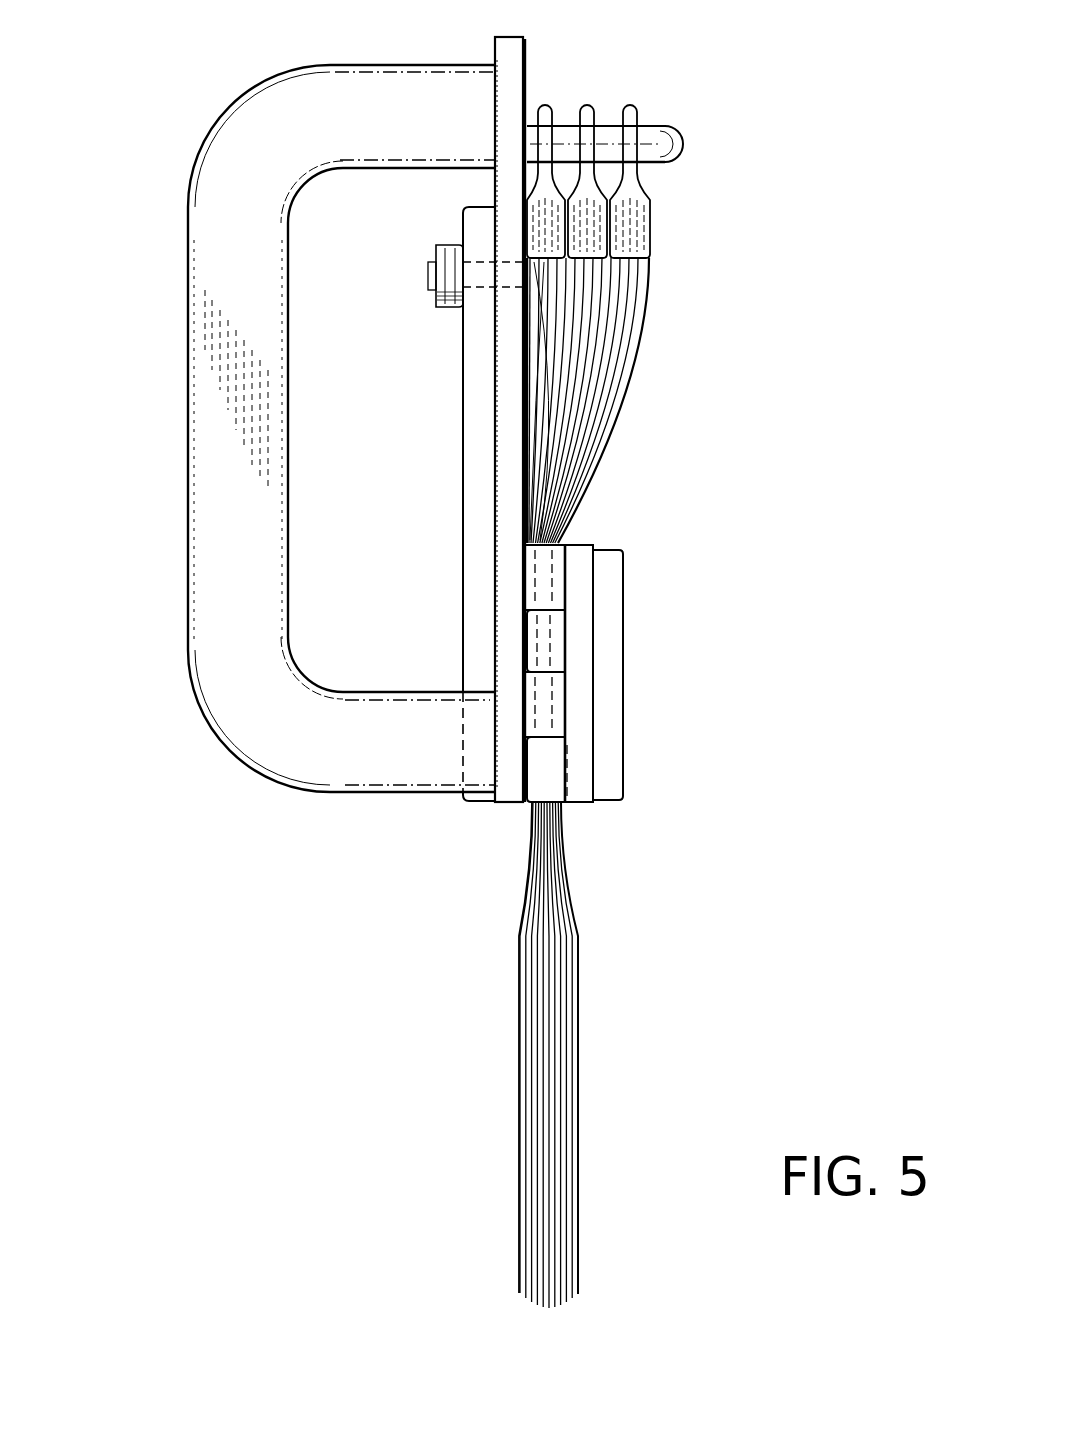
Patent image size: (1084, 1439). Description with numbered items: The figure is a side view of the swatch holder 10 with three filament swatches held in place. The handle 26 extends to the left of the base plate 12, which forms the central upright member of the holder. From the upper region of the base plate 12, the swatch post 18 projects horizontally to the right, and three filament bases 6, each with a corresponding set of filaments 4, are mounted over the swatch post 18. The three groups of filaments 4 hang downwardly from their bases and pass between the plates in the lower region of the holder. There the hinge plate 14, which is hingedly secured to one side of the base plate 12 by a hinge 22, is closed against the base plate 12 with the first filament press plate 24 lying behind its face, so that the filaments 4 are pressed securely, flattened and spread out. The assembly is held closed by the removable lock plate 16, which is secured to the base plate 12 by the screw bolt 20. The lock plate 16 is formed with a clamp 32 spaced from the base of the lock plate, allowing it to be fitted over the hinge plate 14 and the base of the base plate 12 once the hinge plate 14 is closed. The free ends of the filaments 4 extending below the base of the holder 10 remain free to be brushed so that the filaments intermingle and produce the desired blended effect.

The filaments 4 is at (616, 376).
The filament bases 6 is at (552, 104).
The swatch holder 10 is at (740, 442).
The base plate 12 is at (492, 108).
The hinge plate 14 is at (598, 631).
The lock plate 16 is at (477, 498).
The swatch post 18 is at (676, 125).
The screw bolt 20 is at (425, 272).
The hinge 22 is at (556, 762).
The first filament press plate 24 is at (565, 543).
The handle 26 is at (189, 404).
The clamp 32 is at (627, 682).